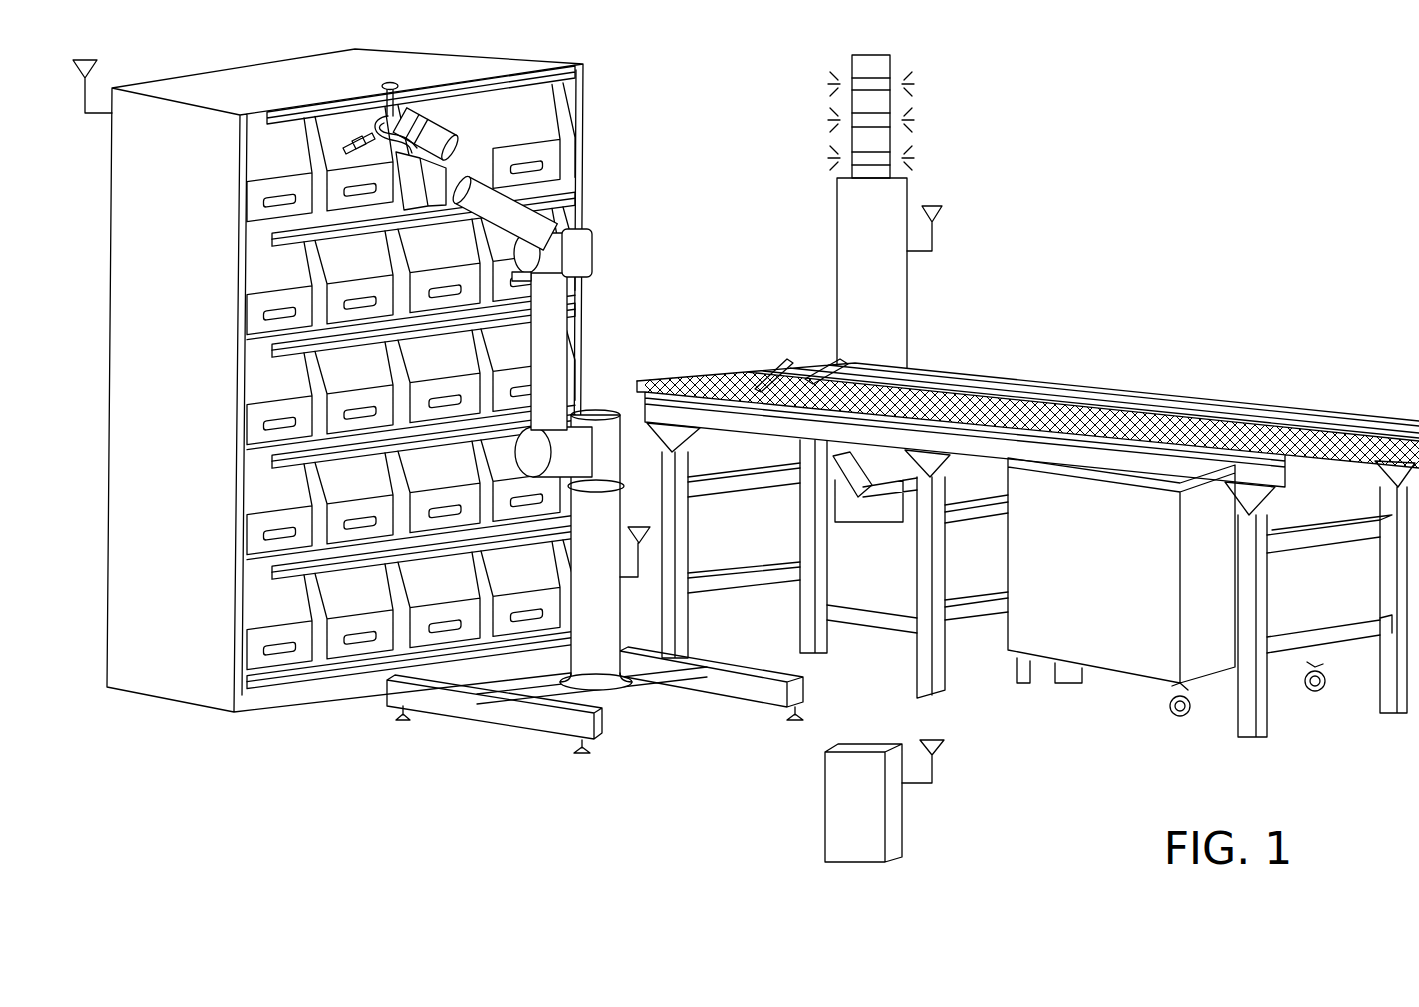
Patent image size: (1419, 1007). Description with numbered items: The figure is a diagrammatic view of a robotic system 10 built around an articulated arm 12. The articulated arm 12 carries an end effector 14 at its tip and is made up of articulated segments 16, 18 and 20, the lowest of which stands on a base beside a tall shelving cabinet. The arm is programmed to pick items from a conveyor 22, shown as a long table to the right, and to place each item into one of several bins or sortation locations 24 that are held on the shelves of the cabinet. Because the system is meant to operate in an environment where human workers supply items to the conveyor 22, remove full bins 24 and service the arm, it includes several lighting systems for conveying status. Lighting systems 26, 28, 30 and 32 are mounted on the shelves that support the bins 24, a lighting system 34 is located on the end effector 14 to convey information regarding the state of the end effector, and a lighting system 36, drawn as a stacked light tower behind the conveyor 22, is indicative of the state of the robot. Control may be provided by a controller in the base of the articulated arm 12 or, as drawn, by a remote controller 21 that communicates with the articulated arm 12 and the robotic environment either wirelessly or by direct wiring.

The robotic system 10 is at (476, 749).
The articulated arm 12 is at (562, 257).
The end effector 14 is at (433, 128).
The articulated segment 16 is at (530, 222).
The articulated segment 18 is at (560, 333).
The articulated segment 20 is at (581, 600).
The remote controller 21 is at (825, 797).
The conveyor 22 is at (1133, 287).
The bins or sortation locations 24 is at (258, 173).
The lighting system 26 is at (270, 239).
The lighting system 28 is at (270, 350).
The lighting system 30 is at (270, 461).
The lighting system 32 is at (270, 572).
The lighting system 34 is at (415, 104).
The lighting system 36 is at (800, 148).